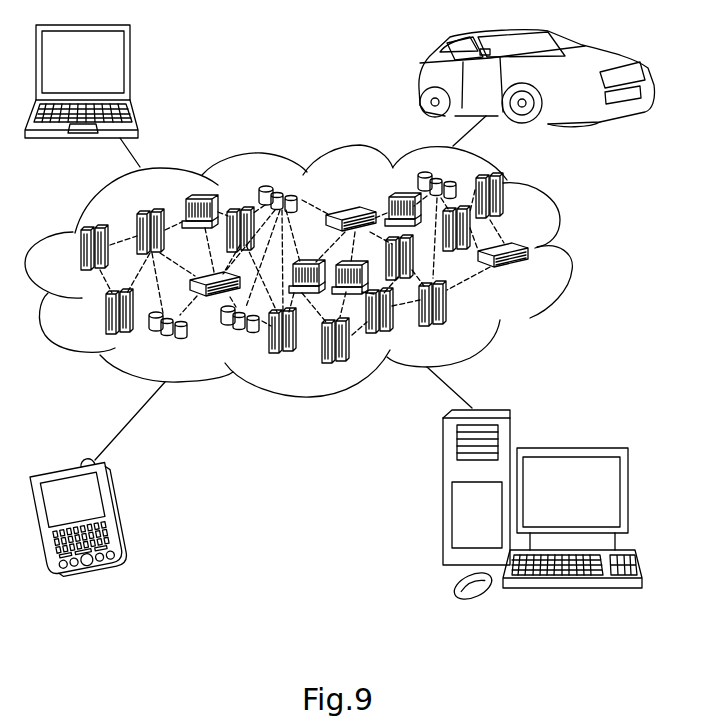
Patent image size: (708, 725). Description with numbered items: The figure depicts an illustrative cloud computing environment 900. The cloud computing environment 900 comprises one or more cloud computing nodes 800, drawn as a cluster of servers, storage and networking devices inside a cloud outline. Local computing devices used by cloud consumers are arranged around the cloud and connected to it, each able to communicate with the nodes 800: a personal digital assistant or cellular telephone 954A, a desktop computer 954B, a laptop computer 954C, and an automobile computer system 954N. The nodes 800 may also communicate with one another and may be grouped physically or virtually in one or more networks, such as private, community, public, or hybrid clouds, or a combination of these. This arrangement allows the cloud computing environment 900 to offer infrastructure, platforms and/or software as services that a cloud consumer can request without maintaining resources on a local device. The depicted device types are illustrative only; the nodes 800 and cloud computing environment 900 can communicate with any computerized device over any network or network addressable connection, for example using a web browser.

The cloud computing environment 900 is at (572, 252).
The cloud computing nodes 800 is at (531, 275).
The personal digital assistant (PDA) or cellular telephone 954A is at (125, 508).
The desktop computer 954B is at (570, 447).
The laptop computer 954C is at (130, 70).
The automobile computer system 954N is at (420, 82).